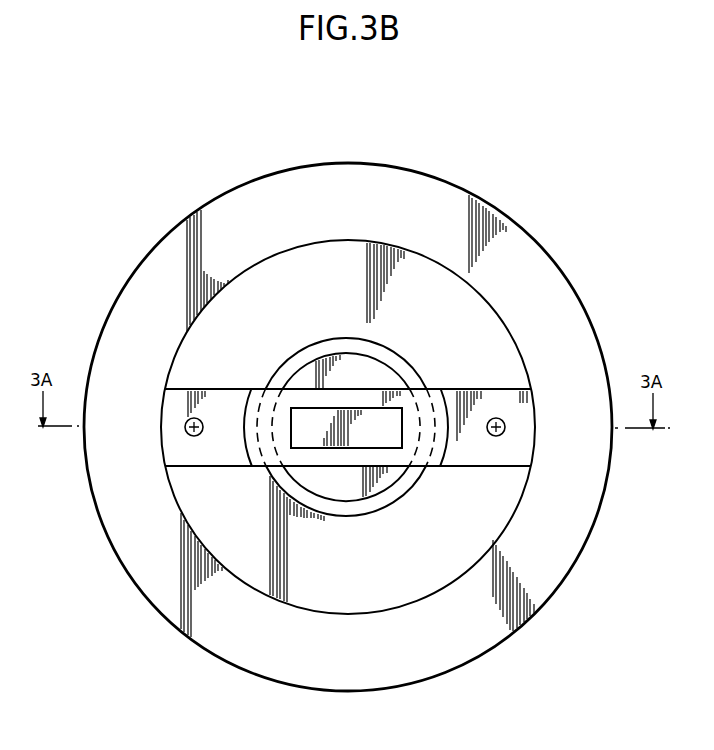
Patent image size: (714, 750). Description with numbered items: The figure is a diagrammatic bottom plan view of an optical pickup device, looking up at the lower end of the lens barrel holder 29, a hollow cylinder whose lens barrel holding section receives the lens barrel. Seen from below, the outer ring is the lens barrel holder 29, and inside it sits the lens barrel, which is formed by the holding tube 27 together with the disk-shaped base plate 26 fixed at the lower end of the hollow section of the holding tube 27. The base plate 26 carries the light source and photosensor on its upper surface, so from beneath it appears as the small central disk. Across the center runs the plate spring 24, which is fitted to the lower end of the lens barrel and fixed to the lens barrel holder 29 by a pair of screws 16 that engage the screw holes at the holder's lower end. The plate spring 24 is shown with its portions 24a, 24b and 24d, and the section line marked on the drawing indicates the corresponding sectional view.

The lens barrel holder 29 is at (342, 161).
The holding tube 27 is at (405, 380).
The base plate 26 is at (395, 383).
The plate spring 24 is at (498, 403).
The rectangular window 24a is at (328, 449).
The arm portions 24b is at (192, 453).
The central portion 24d is at (389, 436).
The screws 16 is at (186, 427).